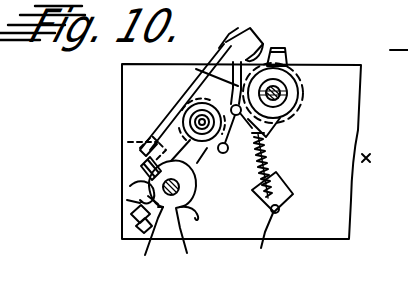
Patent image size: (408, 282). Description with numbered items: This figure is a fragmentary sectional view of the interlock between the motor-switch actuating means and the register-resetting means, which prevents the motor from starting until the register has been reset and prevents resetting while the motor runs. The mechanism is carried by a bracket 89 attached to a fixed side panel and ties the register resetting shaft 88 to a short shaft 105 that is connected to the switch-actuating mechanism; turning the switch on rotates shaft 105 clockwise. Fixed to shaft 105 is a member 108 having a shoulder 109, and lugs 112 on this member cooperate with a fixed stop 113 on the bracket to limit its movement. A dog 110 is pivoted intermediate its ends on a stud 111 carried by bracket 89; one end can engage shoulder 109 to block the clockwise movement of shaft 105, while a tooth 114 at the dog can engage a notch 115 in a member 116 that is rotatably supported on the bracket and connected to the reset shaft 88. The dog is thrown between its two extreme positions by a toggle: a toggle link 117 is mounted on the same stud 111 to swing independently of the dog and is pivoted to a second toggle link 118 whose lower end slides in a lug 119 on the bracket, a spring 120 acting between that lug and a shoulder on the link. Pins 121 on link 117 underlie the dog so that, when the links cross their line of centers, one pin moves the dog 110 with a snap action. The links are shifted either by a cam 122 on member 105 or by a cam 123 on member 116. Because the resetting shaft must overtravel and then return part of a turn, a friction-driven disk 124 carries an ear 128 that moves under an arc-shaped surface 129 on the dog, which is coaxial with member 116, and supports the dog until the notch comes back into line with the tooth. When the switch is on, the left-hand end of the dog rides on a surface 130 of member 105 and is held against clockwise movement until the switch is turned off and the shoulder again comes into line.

The resetting shaft 88 is at (280, 87).
The bracket 89 is at (383, 164).
The short shaft 105 is at (186, 207).
The member 108 is at (153, 244).
The shoulder 109 is at (140, 186).
The dog 110 is at (160, 128).
The stud 111 is at (195, 112).
The lugs 112 is at (200, 216).
The fixed stop 113 is at (152, 207).
The tooth 114 is at (226, 56).
The notch 115 is at (199, 76).
The member 116 is at (299, 93).
The toggle link 117 is at (254, 165).
The second toggle link 118 is at (280, 208).
The lug 119 is at (278, 242).
The spring 120 is at (272, 172).
The pins 121 is at (222, 153).
The cam 122 is at (124, 142).
The cam 123 is at (288, 129).
The disk 124 is at (303, 86).
The ear 128 is at (278, 47).
The arc-shaped surface 129 is at (248, 40).
The surface 130 is at (129, 187).